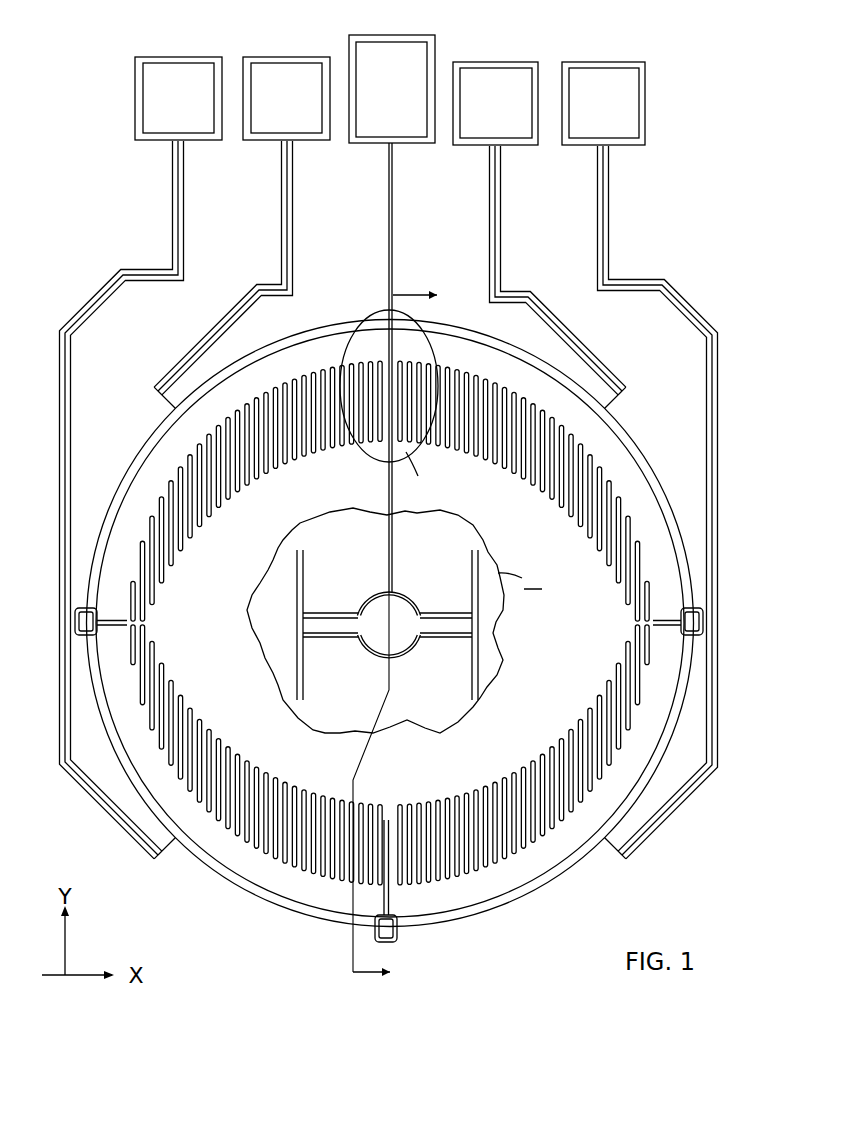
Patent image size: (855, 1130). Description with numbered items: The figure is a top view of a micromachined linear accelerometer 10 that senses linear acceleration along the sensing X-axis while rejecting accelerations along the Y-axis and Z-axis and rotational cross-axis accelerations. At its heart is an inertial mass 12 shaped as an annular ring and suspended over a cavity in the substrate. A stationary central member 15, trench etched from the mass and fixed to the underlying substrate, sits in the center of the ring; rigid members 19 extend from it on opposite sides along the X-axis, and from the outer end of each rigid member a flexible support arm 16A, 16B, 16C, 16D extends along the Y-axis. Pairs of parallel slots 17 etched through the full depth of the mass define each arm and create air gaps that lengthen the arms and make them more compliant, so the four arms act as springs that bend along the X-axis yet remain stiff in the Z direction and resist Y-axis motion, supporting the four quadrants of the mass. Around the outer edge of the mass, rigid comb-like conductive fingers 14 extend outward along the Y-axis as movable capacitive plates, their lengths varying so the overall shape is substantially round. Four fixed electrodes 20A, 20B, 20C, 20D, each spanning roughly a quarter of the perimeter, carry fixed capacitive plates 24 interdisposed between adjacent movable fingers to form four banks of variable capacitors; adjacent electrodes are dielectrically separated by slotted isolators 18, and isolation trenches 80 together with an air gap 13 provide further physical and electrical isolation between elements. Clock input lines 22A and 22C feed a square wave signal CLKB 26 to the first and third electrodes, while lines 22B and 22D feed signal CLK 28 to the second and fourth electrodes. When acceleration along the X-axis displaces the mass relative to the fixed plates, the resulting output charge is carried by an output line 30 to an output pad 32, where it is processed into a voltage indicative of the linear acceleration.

The linear accelerometer 10 is at (680, 88).
The inertial mass 12 is at (298, 505).
The air gap 13 is at (368, 596).
The conductive fingers 14 is at (227, 503).
The central member 15 is at (400, 600).
The support arm 16A is at (305, 553).
The support arm 16B is at (472, 562).
The support arm 16C is at (480, 678).
The support arm 16D is at (305, 692).
The slots 17 is at (307, 599).
The isolators 18 is at (76, 623).
The rigid members 19 is at (323, 628).
The first fixed electrode 20A is at (163, 450).
The second fixed electrode 20B is at (611, 448).
The third fixed electrode 20C is at (538, 879).
The fourth fixed electrode 20D is at (214, 871).
The clock input line 22A is at (205, 340).
The clock input 22B is at (571, 347).
The input line 22C is at (688, 800).
The input line 22D is at (93, 800).
The fixed capacitive plates 24 is at (235, 413).
The signal CLKB 26 is at (281, 56).
The signal CLK 28 is at (170, 56).
The output line 30 is at (392, 190).
The output pad 32 is at (370, 35).
The isolation trenches 80 is at (281, 346).